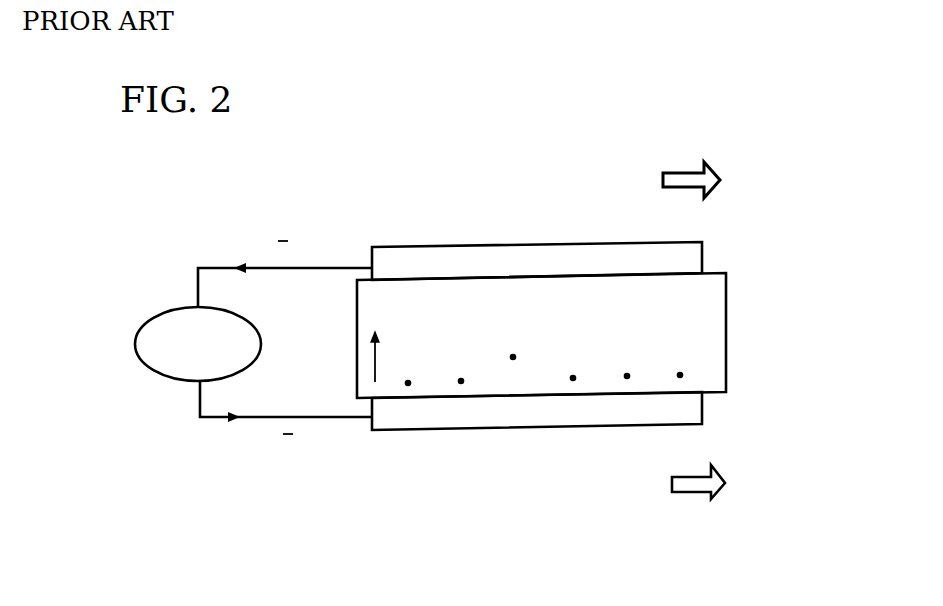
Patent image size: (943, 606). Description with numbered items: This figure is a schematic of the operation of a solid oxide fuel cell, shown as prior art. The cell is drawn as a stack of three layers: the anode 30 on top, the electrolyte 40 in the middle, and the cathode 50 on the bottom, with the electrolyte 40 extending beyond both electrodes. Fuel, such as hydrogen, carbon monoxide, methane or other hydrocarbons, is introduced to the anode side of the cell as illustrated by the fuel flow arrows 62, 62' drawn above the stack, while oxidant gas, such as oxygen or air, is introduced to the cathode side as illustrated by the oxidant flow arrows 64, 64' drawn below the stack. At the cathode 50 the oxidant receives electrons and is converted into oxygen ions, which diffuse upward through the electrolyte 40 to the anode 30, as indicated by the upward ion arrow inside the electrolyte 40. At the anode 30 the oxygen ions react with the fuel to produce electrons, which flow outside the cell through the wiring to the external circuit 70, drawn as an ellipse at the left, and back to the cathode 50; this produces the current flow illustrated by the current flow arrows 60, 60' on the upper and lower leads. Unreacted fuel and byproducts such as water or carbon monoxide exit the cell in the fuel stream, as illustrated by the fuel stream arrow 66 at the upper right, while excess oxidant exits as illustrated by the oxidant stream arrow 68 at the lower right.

The anode 30 is at (702, 248).
The electrolyte 40 is at (726, 311).
The cathode 50 is at (703, 405).
The current flow arrow 60 is at (285, 261).
The current flow arrow 60' is at (285, 432).
The fuel flow arrow 62 is at (319, 172).
The fuel flow arrow 62' is at (429, 170).
The oxidant flow arrow 64 is at (327, 514).
The oxidant flow arrow 64' is at (440, 514).
The fuel stream arrow 66 is at (685, 170).
The oxidant stream arrow 68 is at (688, 492).
The external circuit 70 is at (157, 317).